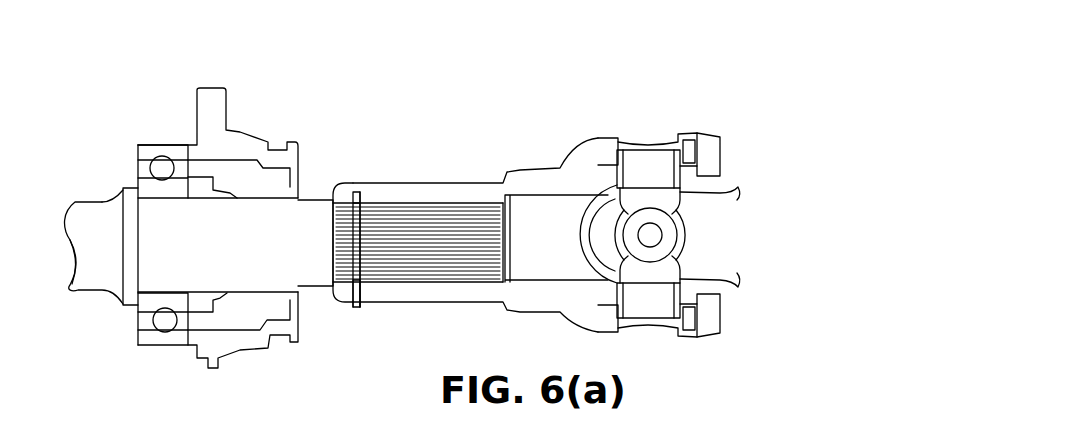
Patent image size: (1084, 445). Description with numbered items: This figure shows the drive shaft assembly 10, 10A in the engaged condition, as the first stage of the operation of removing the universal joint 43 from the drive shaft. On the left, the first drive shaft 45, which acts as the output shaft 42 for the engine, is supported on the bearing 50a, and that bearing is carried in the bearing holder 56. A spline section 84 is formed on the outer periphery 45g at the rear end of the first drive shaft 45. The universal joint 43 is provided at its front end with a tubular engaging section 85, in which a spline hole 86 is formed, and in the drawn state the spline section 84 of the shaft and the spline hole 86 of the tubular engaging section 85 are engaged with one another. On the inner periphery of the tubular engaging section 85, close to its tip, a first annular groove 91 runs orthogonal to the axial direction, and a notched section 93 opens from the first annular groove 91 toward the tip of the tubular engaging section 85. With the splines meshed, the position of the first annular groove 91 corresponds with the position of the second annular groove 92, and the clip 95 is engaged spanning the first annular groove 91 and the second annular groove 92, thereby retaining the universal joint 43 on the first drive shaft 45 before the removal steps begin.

The propeller shaft 10 is at (470, 201).
The propeller shaft 10A is at (745, 109).
The output shaft 42 is at (291, 170).
The first drive shaft 45 is at (318, 215).
The universal joint 43 is at (572, 139).
The outer periphery 45g is at (418, 164).
The spline section 84 is at (387, 210).
The bearing 50a is at (162, 156).
The bearing holder 56 is at (215, 95).
The tubular engaging section 85 is at (529, 181).
The spline hole 86 is at (450, 207).
The first annular groove 91 is at (350, 193).
The second annular groove 92 is at (374, 197).
The notched section 93 is at (343, 290).
The clip 95 is at (361, 300).